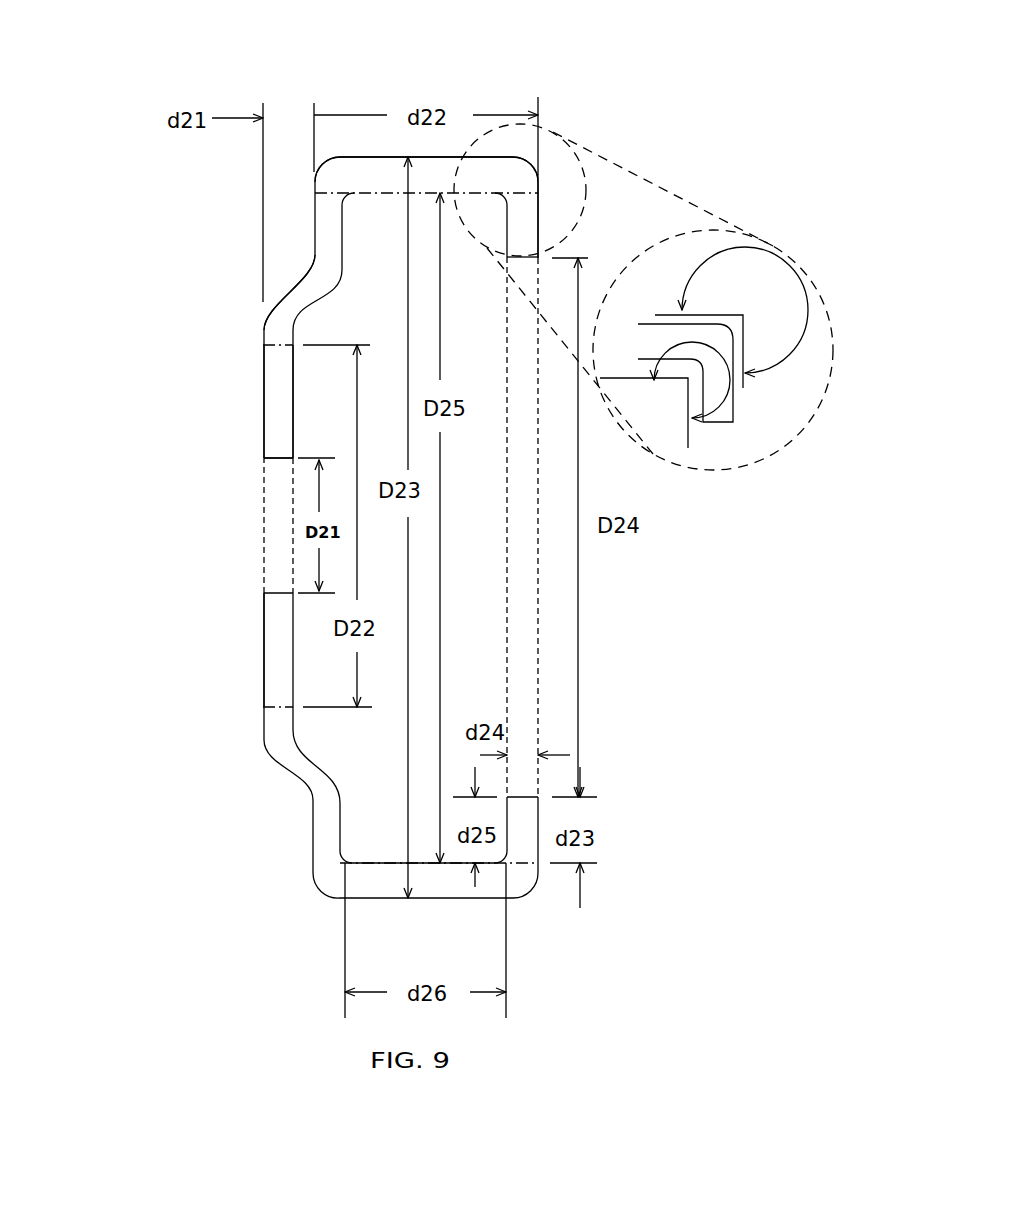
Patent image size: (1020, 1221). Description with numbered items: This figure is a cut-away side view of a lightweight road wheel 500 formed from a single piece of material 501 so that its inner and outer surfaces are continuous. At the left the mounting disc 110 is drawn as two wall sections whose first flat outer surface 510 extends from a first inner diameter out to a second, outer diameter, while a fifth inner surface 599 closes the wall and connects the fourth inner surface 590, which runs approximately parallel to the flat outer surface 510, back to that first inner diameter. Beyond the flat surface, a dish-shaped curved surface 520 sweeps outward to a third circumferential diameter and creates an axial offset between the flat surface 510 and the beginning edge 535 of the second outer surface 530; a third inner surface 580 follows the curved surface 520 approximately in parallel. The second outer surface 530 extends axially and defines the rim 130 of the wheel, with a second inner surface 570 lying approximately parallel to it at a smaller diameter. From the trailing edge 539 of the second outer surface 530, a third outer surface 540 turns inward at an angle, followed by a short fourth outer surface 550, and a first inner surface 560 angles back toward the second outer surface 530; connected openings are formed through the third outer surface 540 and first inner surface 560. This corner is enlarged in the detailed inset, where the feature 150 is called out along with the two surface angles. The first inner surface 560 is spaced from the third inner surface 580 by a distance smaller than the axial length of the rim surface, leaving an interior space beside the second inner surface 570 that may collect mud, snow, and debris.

The lightweight road wheel 500 is at (218, 823).
The single piece of material 501 is at (323, 797).
The mounting disc 110 is at (278, 395).
The rim 130 is at (427, 880).
The inner corner 150 is at (520, 233).
The first flat outer surface 510 is at (260, 430).
The dish-shaped curved surface 520 is at (260, 328).
The second outer surface 530 is at (455, 152).
The beginning edge 535 is at (312, 185).
The trailing edge 539 is at (540, 180).
The third outer surface 540 is at (544, 210).
The fourth outer surface 550 is at (520, 263).
The first inner surface 560 is at (503, 232).
The second inner surface 570 is at (375, 196).
The third inner surface 580 is at (337, 285).
The fourth inner surface 590 is at (295, 387).
The fifth inner surface 599 is at (280, 460).